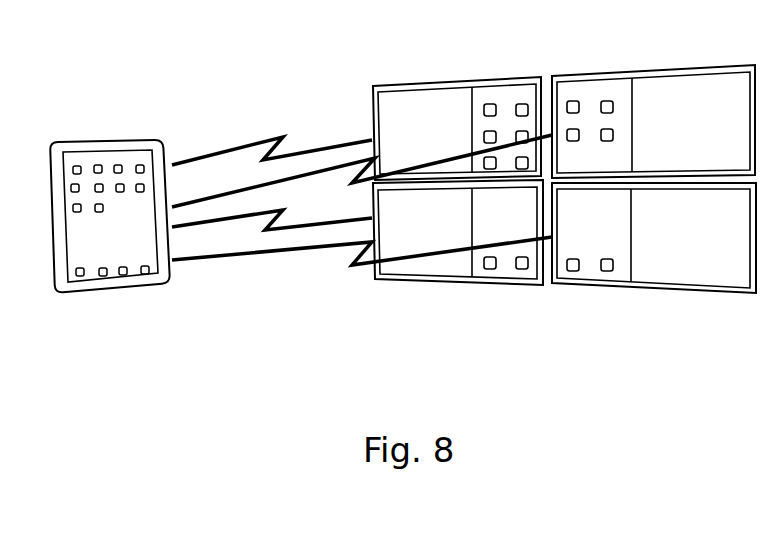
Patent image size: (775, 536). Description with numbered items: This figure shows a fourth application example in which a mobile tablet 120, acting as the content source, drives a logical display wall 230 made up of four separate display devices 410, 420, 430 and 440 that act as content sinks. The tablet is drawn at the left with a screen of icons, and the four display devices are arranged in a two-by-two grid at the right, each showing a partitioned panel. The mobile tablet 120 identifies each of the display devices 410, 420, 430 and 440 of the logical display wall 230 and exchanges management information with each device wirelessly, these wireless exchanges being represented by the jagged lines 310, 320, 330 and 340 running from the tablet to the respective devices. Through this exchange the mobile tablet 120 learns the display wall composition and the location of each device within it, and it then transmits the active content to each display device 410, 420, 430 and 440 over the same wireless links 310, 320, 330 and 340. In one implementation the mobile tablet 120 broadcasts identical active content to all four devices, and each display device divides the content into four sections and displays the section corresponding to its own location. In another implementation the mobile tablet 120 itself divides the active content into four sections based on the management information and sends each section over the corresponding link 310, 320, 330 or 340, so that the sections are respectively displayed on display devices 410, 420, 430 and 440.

The mobile tablet 120 is at (102, 157).
The logical display wall 230 is at (530, 361).
The wireless exchange with first display device 310 is at (272, 158).
The wireless exchange with second display device 320 is at (362, 171).
The wireless exchange with third display device 330 is at (272, 229).
The wireless exchange with fourth display device 340 is at (362, 261).
The display device 410 is at (413, 112).
The display device 420 is at (663, 93).
The display device 430 is at (438, 262).
The display device 440 is at (657, 262).